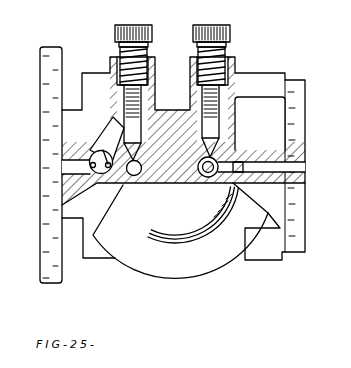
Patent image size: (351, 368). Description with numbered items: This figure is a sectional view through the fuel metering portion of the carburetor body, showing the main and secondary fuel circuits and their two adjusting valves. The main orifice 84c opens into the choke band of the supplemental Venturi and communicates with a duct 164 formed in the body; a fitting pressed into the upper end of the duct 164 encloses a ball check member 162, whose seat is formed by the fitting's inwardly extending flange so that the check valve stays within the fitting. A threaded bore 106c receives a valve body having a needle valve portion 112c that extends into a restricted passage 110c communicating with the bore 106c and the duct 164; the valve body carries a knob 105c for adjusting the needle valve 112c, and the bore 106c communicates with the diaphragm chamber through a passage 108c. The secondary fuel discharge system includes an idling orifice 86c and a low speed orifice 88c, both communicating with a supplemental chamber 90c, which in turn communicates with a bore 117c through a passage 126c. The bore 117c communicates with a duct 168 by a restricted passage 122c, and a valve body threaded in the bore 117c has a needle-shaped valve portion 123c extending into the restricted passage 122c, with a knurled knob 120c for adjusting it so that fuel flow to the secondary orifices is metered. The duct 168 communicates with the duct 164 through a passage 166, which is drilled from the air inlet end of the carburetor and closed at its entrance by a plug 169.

The knurled knob 120c is at (134, 25).
The knob 105c is at (224, 14).
The threaded bore 106c is at (237, 110).
The passage 108c is at (232, 120).
The bore 117c is at (148, 112).
The needle valve portion 112c is at (222, 133).
The restricted passage 110c is at (236, 143).
The main orifice 84c is at (226, 152).
The needle-shaped valve portion 123c is at (148, 137).
The passage 126c is at (116, 143).
The low speed orifice 88c is at (105, 155).
The idling orifice 86c is at (85, 156).
The supplemental chamber 90c is at (90, 168).
The restricted passage 122c is at (141, 173).
The duct 168 is at (134, 176).
The passage 166 is at (185, 190).
The ball check member 162 is at (204, 186).
The duct 164 is at (232, 190).
The plug 169 is at (240, 184).